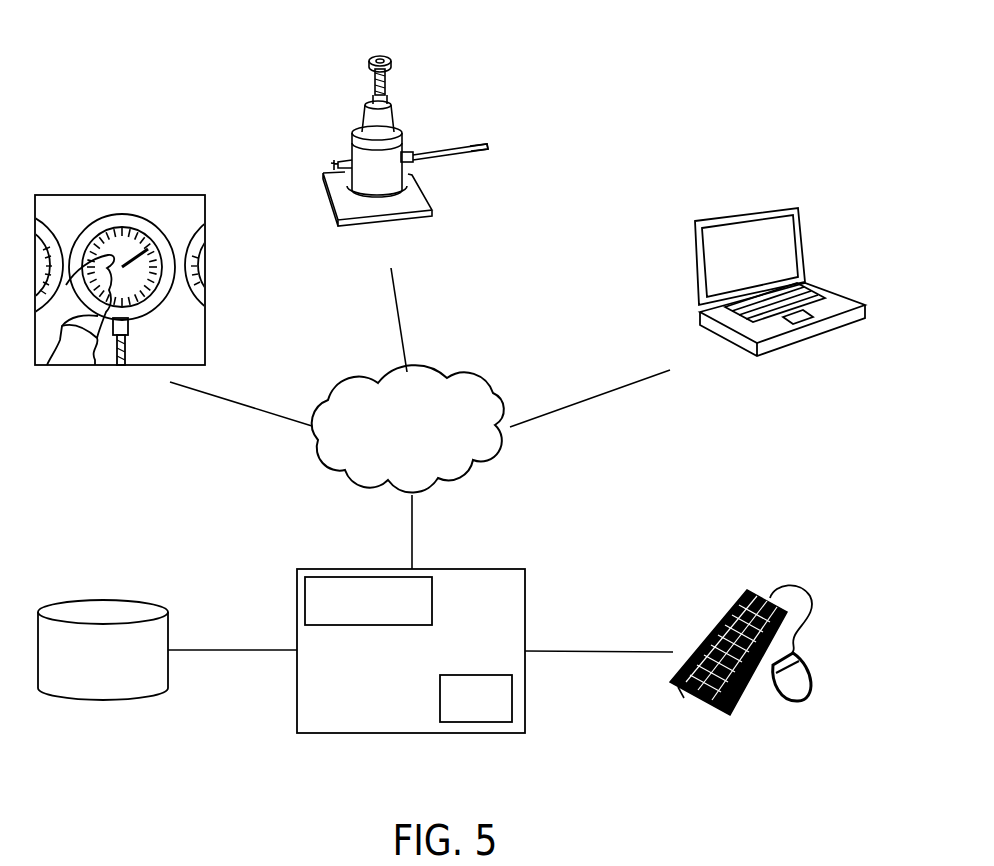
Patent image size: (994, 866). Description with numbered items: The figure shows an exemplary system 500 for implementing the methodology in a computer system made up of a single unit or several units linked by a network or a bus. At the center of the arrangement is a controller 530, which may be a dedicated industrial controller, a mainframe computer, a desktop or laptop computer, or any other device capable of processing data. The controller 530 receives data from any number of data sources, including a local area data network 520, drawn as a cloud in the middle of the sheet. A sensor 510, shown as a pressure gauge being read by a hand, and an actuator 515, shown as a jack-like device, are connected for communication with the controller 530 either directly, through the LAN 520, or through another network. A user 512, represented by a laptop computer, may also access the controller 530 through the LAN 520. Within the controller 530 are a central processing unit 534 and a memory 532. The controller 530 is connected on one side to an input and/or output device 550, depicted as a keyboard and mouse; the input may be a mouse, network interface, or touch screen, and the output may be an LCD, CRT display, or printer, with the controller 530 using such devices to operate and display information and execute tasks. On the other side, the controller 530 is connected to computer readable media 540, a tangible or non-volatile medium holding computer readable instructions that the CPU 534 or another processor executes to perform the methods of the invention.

The system 500 is at (637, 74).
The sensor 510 is at (116, 195).
The user 512 is at (747, 212).
The actuator 515 is at (380, 55).
The local area data network 520 is at (470, 365).
The controller 530 is at (428, 568).
The memory 532 is at (433, 606).
The central processing unit 534 is at (478, 722).
The computer readable media 540 is at (102, 598).
The input and/or output device 550 is at (745, 590).